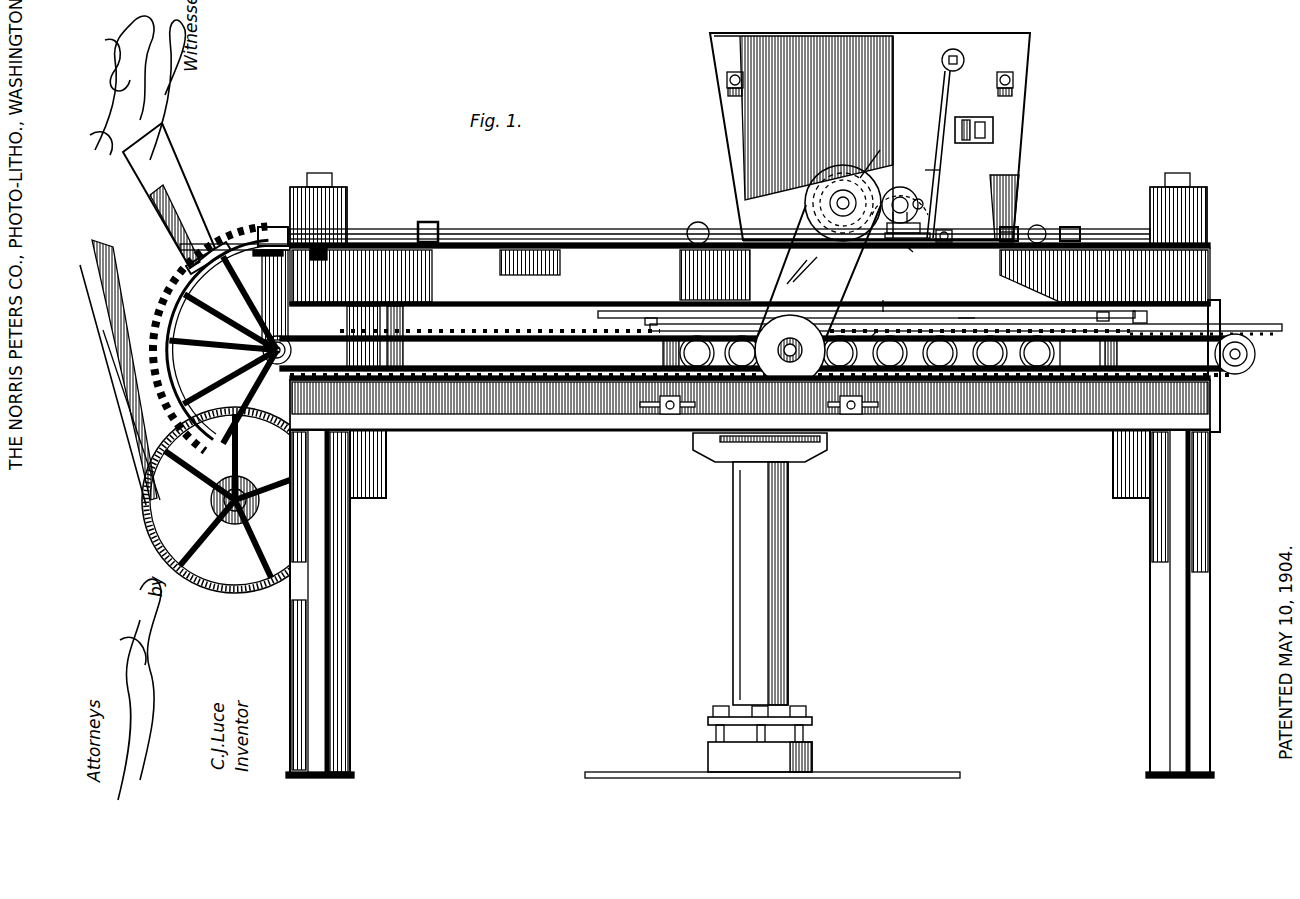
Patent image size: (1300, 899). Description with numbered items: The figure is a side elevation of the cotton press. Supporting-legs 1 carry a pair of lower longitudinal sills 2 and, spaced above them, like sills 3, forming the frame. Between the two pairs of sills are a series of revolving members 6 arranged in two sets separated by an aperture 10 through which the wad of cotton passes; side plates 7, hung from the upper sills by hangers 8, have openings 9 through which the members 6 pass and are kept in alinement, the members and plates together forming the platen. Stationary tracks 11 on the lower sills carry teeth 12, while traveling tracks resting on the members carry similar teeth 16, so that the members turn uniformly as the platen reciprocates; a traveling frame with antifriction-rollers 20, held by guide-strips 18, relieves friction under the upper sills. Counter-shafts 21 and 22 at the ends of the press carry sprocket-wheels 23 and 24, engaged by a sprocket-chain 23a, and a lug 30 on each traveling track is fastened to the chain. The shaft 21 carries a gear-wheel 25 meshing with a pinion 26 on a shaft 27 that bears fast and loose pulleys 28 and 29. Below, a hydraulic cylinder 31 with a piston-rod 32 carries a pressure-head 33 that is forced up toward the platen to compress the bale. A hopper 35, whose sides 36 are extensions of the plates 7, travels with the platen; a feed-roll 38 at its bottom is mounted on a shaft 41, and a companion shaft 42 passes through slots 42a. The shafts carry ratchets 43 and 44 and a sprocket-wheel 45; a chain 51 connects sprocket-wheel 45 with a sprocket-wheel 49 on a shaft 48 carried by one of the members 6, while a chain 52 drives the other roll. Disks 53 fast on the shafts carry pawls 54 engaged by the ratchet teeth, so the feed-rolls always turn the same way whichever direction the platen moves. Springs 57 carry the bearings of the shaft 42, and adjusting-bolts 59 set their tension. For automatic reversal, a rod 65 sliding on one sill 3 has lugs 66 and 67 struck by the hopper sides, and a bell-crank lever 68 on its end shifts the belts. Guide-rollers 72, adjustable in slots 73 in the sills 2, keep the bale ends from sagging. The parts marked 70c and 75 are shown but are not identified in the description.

The supporting-legs 1 is at (352, 548).
The longitudinal sills 2 is at (485, 427).
The upper sills 3 is at (736, 256).
The revolving members 6 is at (867, 353).
The side plates 7 is at (871, 353).
The hangers 8 is at (704, 226).
The openings 9 is at (742, 353).
The aperture 10 is at (958, 318).
The stationary tracks 11 is at (478, 385).
The teeth 12 is at (677, 338).
The teeth 16 is at (1250, 335).
The guide-strips 18 is at (598, 315).
The antifriction-rollers 20 is at (773, 305).
The counter-shaft 21 is at (262, 350).
The counter-shaft 22 is at (1248, 366).
The sprocket-wheel 23 is at (270, 364).
The sprocket-chain 23a is at (590, 338).
The sprocket-wheel 24 is at (1222, 392).
The gear-wheel 25 is at (240, 366).
The pinion 26 is at (210, 503).
The shaft 27 is at (236, 540).
The fast pulley 28 is at (160, 540).
The loose pulley 29 is at (185, 432).
The lug 30 is at (1099, 312).
The hydraulic cylinder 31 is at (660, 766).
The piston-rod 32 is at (735, 663).
The pressure-head 33 is at (708, 455).
The hopper 35 is at (870, 125).
The hopper sides 36 is at (904, 137).
The feed-roll 38 is at (940, 170).
The shaft 41 is at (830, 205).
The shaft 42 is at (915, 200).
The slots 42a is at (925, 210).
The ratchet 43 is at (822, 190).
The ratchet 44 is at (903, 188).
The sprocket-wheel 45 is at (806, 222).
The shaft 48 is at (797, 338).
The sprocket-wheel 49 is at (883, 300).
The chain 51 is at (818, 272).
The chain 52 is at (876, 332).
The disks 53 is at (850, 178).
The pawls 54 is at (860, 178).
The springs 57 is at (948, 101).
The adjusting-bolts 59 is at (985, 125).
The rod 65 is at (596, 230).
The lug 66 is at (1033, 228).
The lug 67 is at (438, 230).
The bell-crank lever 68 is at (243, 243).
The guide plate 70c is at (913, 252).
The guide-rollers 72 is at (648, 410).
The slots 73 is at (870, 410).
The bar end 75 is at (653, 321).